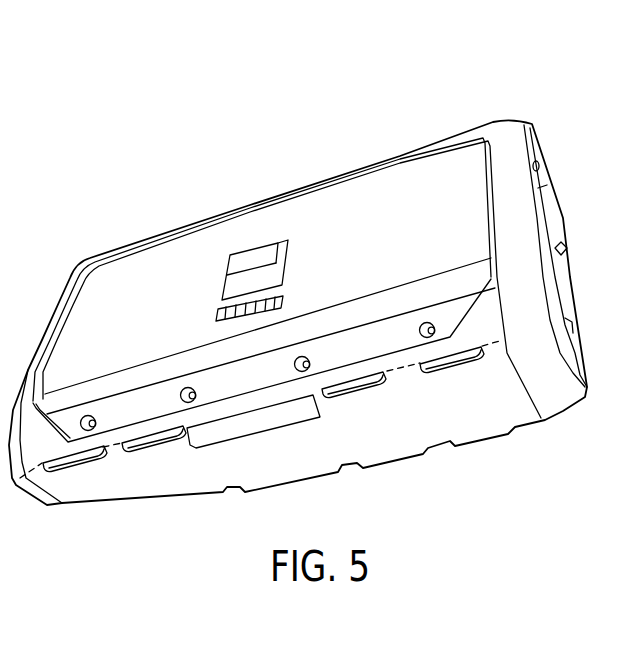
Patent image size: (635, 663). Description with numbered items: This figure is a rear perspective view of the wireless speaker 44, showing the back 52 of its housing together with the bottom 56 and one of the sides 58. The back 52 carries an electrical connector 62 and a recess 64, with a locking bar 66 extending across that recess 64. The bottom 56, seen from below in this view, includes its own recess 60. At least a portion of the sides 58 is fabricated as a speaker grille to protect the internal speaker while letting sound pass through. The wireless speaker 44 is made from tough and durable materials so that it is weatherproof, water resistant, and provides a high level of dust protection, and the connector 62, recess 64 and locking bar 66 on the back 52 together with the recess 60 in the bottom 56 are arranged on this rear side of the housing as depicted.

The wireless speaker 44 is at (584, 106).
The back 52 is at (455, 233).
The bottom 56 is at (473, 413).
The sides 58 is at (556, 270).
The recess 60 is at (280, 413).
The electrical connector 62 is at (218, 315).
The recess 64 is at (242, 263).
The locking bar 66 is at (278, 255).